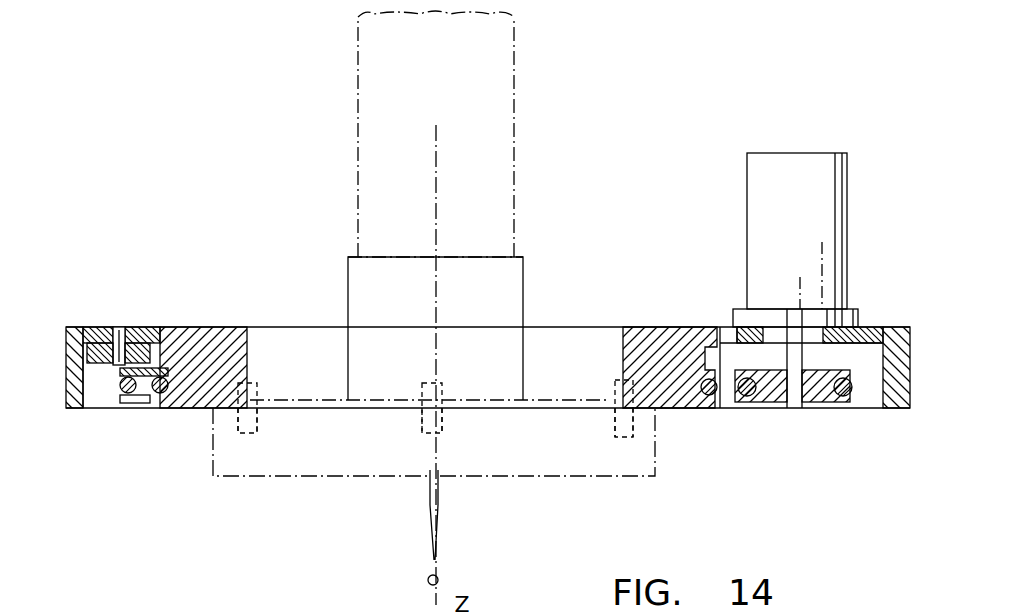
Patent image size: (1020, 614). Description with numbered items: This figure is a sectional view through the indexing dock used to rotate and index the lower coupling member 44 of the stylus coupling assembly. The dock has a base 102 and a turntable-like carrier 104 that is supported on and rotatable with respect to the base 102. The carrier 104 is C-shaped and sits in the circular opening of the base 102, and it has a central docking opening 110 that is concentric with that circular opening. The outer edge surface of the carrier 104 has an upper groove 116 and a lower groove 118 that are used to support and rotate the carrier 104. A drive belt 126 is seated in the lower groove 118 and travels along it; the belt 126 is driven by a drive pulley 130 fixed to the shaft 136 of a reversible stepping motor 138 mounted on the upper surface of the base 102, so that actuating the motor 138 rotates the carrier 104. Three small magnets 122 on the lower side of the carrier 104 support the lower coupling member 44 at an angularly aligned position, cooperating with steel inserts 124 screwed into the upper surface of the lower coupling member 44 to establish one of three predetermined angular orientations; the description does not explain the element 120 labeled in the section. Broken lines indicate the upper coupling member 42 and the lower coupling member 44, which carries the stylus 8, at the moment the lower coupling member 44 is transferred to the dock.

The stylus 8 is at (445, 530).
The upper coupling member 42 is at (365, 398).
The lower coupling member 44 is at (503, 470).
The base 102 is at (93, 327).
The carrier 104 is at (220, 338).
The docking opening 110 is at (302, 338).
The upper groove 116 is at (698, 350).
The lower groove 118 is at (709, 398).
The bolt 120 is at (93, 368).
The magnets 122 is at (255, 384).
The steel inserts 124 is at (258, 432).
The drive belt 126 is at (140, 410).
The drive pulley 130 is at (776, 402).
The shaft 136 is at (802, 352).
The motor 138 is at (795, 240).